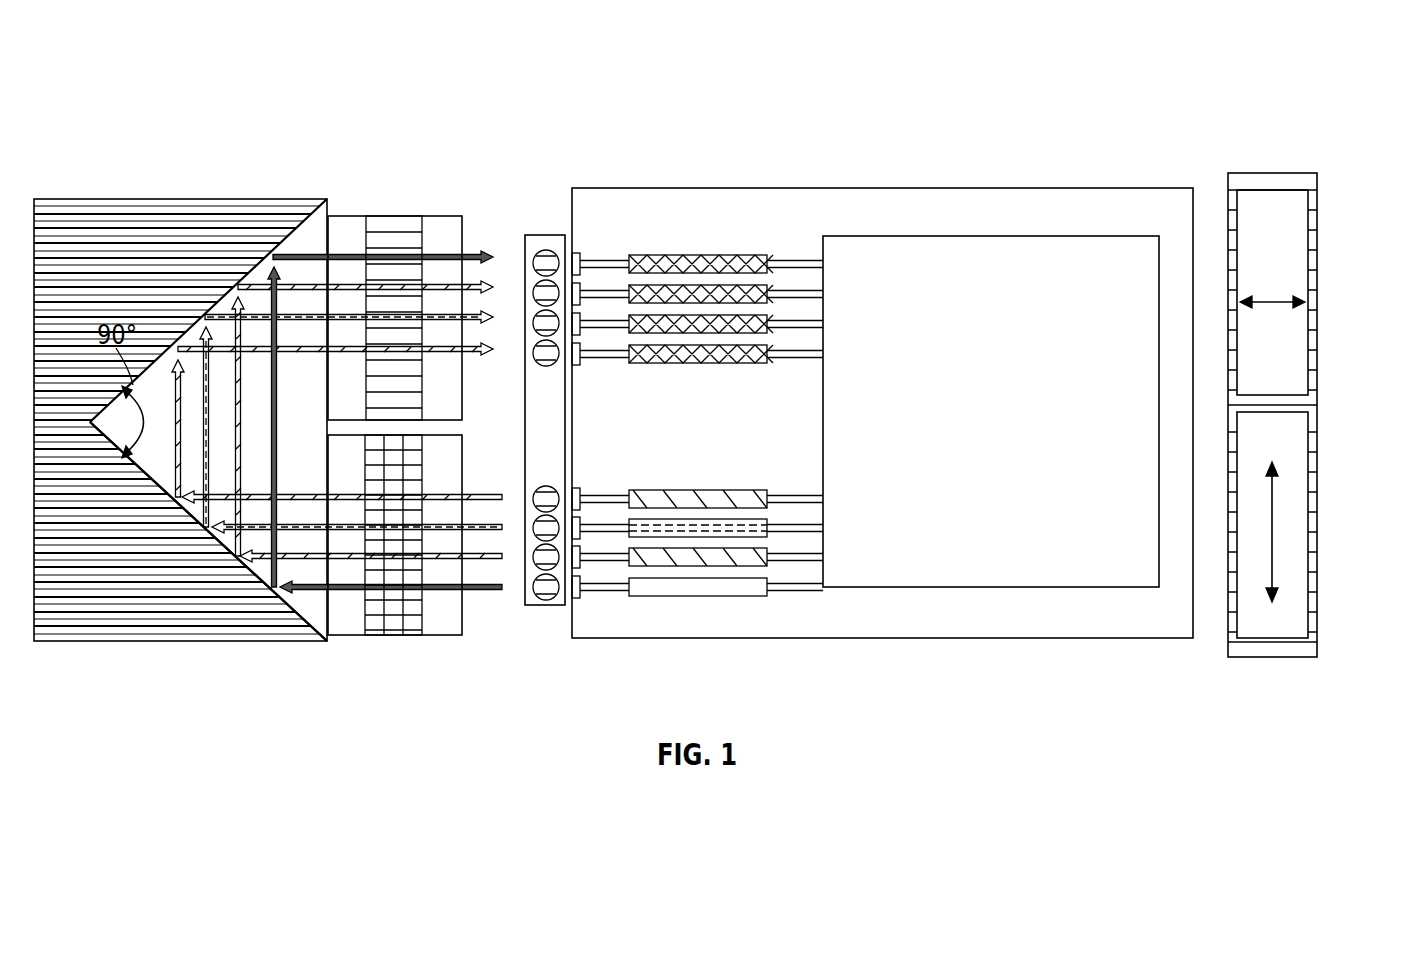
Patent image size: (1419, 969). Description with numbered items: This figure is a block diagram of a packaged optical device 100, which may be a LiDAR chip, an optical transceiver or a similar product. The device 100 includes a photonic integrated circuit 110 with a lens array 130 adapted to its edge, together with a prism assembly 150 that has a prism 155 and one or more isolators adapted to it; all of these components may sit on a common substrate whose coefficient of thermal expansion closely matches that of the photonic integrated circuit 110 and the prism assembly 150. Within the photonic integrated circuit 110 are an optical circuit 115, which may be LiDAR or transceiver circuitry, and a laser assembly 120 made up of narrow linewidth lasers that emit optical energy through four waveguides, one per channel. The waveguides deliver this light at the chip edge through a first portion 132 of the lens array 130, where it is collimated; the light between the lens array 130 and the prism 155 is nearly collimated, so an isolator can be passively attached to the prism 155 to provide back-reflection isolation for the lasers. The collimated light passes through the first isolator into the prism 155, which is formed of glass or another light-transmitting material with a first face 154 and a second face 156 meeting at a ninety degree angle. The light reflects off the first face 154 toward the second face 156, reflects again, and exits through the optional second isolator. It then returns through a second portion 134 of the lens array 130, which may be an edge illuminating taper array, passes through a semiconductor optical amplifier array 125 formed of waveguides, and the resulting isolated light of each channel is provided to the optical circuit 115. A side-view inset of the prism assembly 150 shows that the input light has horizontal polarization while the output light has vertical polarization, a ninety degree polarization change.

The device 100 is at (112, 90).
The photonic integrated circuit 110 is at (1128, 188).
The optical circuit 115 is at (1087, 236).
The laser assembly 120 is at (703, 490).
The semiconductor optical amplifier array 125 is at (692, 256).
The lens array 130 is at (540, 607).
The first portion of lens array 132 is at (542, 488).
The second portion of lens array 134 is at (544, 247).
The prism assembly 150 is at (219, 199).
The first face 154 is at (215, 550).
The prism 155 is at (150, 451).
The second face 156 is at (220, 293).